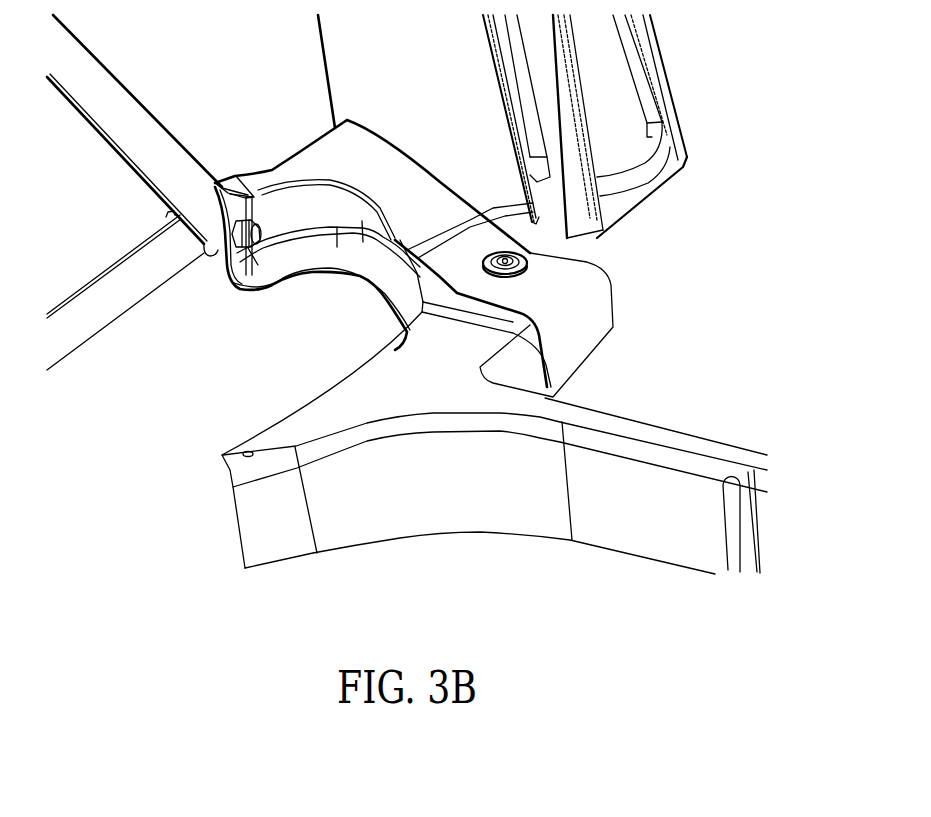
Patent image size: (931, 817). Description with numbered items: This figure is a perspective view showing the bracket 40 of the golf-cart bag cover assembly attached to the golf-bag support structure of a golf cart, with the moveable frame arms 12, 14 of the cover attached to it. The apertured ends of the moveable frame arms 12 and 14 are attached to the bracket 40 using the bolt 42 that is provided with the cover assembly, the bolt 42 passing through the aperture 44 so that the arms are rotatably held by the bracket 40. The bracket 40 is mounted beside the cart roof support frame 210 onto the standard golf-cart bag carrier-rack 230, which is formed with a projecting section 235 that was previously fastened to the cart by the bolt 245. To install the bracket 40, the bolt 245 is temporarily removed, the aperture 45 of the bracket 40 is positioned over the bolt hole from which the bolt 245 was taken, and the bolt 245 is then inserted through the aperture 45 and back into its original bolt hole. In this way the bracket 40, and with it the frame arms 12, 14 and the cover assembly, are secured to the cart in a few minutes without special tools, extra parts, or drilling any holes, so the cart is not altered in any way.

The moveable frame arm 12 is at (90, 128).
The moveable frame arm 14 is at (118, 255).
The bracket 40 is at (322, 135).
The bolt 42 is at (248, 220).
The aperture 44 is at (227, 267).
The aperture 45 is at (528, 262).
The cart roof support frame 210 is at (680, 123).
The standard golf-cart bag carrier-rack 230 is at (345, 390).
The section of standard golf-cart bag carrier-rack 235 is at (455, 317).
The bolt 245 is at (523, 273).